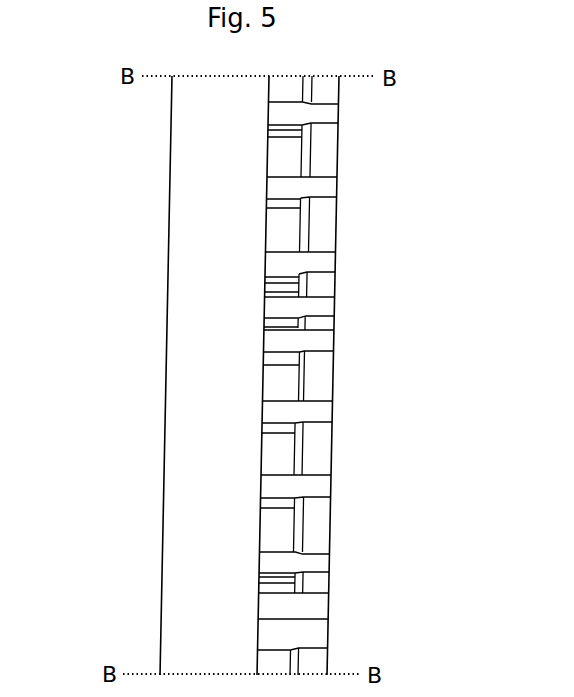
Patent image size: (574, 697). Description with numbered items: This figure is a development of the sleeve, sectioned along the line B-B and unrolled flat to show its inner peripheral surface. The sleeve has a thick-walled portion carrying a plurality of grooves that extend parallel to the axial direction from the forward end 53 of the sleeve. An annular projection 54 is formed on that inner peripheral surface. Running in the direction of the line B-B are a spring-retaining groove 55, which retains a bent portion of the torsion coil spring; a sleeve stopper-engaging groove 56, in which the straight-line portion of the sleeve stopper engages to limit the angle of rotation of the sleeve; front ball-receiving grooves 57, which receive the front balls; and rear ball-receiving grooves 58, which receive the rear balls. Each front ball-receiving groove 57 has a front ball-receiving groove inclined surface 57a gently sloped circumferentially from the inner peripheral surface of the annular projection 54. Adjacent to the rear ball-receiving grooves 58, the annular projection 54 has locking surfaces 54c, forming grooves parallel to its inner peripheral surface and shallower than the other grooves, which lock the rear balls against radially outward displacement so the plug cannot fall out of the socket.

The forward end 53 is at (338, 223).
The annular projection 54 is at (288, 230).
The locking surfaces 54c is at (273, 132).
The spring-retaining groove 55 is at (322, 607).
The sleeve stopper-engaging groove 56 is at (330, 305).
The front ball-receiving grooves 57 is at (323, 340).
The front ball-receiving groove inclined surface 57a is at (272, 358).
The rear ball-receiving grooves 58 is at (327, 114).